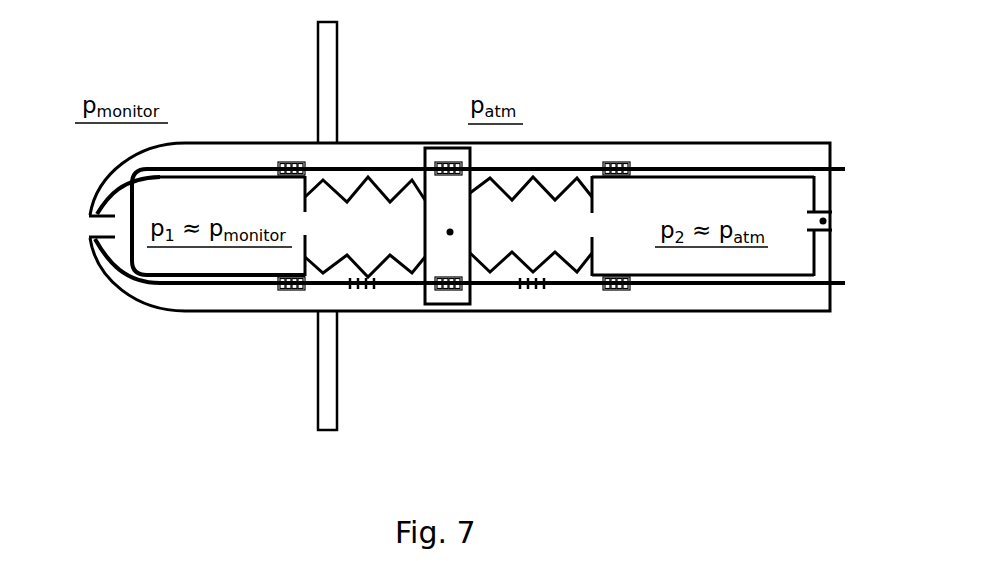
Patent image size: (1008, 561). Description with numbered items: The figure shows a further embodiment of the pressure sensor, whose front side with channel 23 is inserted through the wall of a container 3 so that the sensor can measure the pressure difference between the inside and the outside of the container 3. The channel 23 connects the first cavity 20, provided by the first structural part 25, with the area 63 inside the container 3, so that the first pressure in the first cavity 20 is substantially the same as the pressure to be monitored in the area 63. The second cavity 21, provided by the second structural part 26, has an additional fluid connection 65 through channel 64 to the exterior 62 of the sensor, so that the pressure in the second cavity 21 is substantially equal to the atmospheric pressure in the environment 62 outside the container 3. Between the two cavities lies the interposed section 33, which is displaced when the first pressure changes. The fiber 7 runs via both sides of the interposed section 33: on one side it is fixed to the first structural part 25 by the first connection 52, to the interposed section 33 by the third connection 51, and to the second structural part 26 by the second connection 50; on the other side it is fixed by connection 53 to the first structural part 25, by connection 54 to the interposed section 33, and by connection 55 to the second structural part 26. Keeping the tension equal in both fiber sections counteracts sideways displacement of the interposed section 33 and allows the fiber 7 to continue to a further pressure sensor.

The container 3 is at (318, 47).
The fiber 7 is at (146, 283).
The first cavity 20 is at (242, 170).
The second cavity 21 is at (814, 197).
The channel 23 is at (97, 236).
The first structural part 25 is at (110, 253).
The second structural part 26 is at (687, 177).
The interposed section 33 is at (450, 232).
The second connection 50 is at (616, 290).
The third connection 51 is at (448, 290).
The first connection 52 is at (289, 290).
The connection 53 is at (283, 163).
The connection 54 is at (441, 162).
The connection 55 is at (612, 162).
The exterior 62 is at (560, 65).
The area 63 is at (178, 65).
The channel 64 is at (808, 212).
The fluid connection 65 is at (826, 222).